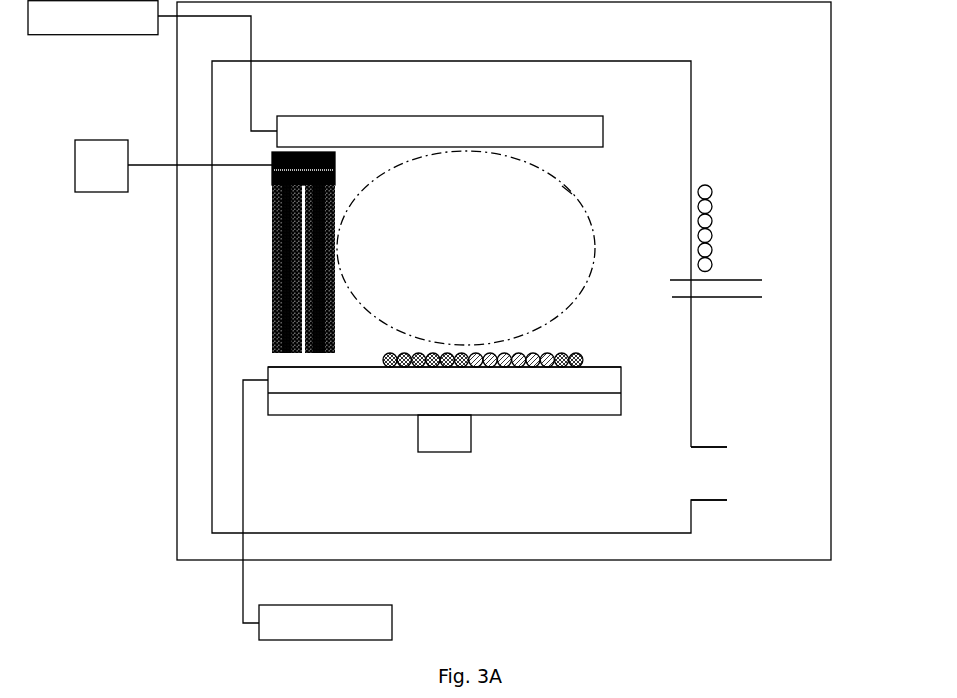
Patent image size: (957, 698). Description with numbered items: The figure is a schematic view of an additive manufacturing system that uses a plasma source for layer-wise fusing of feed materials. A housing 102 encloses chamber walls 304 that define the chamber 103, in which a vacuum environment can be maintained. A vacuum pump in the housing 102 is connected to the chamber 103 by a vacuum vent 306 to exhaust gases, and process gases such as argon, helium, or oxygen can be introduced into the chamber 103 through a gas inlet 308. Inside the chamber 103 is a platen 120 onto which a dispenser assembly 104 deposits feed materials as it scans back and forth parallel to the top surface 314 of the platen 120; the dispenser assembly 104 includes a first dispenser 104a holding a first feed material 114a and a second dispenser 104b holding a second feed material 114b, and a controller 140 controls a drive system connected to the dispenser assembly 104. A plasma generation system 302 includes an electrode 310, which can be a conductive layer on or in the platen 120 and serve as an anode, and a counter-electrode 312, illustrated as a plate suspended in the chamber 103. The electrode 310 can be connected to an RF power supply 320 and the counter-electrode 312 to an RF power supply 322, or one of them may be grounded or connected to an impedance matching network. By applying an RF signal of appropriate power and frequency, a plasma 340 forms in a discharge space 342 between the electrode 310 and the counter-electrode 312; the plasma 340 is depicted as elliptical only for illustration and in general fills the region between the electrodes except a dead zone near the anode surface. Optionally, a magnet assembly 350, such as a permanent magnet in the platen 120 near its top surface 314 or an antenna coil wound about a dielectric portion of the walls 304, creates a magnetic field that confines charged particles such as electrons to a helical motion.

The housing 102 is at (175, 316).
The chamber 103 is at (632, 268).
The dispenser assembly 104 is at (272, 180).
The first dispenser 104a is at (272, 285).
The second dispenser 104b is at (336, 252).
The first feed material 114a is at (578, 351).
The second feed material 114b is at (504, 351).
The platen 120 is at (348, 402).
The controller 140 is at (174, 166).
The plasma generation system 302 is at (642, 398).
The chamber walls 304 is at (212, 362).
The vacuum vent 306 is at (712, 500).
The gas inlet 308 is at (740, 297).
The electrode 310 is at (444, 391).
The counter-electrode 312 is at (440, 131).
The top surface 314 is at (600, 366).
The RF power supply 320 is at (317, 510).
The RF power supply 322 is at (152, 66).
The plasma 340 is at (466, 248).
The discharge space 342 is at (567, 190).
The magnet assembly 350 is at (710, 205).